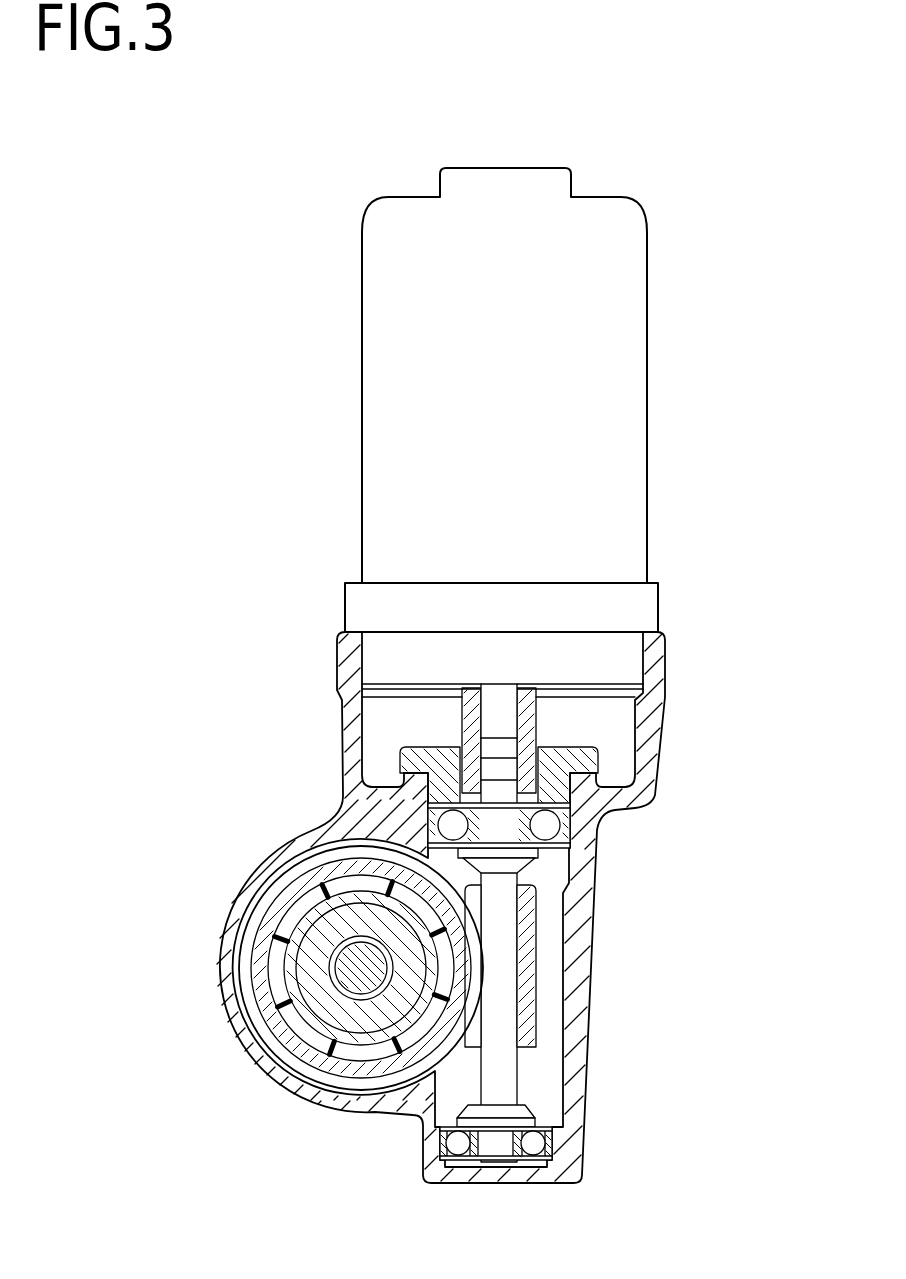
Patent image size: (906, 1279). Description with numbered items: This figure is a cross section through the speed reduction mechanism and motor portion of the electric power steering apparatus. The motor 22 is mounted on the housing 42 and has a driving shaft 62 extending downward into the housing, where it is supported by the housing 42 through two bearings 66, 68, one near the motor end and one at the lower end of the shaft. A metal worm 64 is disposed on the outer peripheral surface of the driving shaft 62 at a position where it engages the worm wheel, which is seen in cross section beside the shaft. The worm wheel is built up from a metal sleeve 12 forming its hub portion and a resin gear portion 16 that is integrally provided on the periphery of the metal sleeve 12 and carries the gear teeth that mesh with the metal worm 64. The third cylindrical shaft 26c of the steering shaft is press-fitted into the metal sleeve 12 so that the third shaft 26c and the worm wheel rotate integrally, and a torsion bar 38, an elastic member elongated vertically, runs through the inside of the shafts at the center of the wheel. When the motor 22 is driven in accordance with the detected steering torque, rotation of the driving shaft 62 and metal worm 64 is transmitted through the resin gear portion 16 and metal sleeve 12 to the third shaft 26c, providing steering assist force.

The motor 22 is at (612, 369).
The housing 42 is at (645, 793).
The driving shaft 62 is at (503, 1075).
The metal worm 64 is at (532, 970).
The bearing 66 is at (548, 828).
The bearing 68 is at (538, 1146).
The metal sleeve 12 is at (318, 1033).
The third cylindrical shaft 26c is at (318, 1003).
The resin gear portion 16 is at (362, 1063).
The torsion bar 38 is at (342, 970).